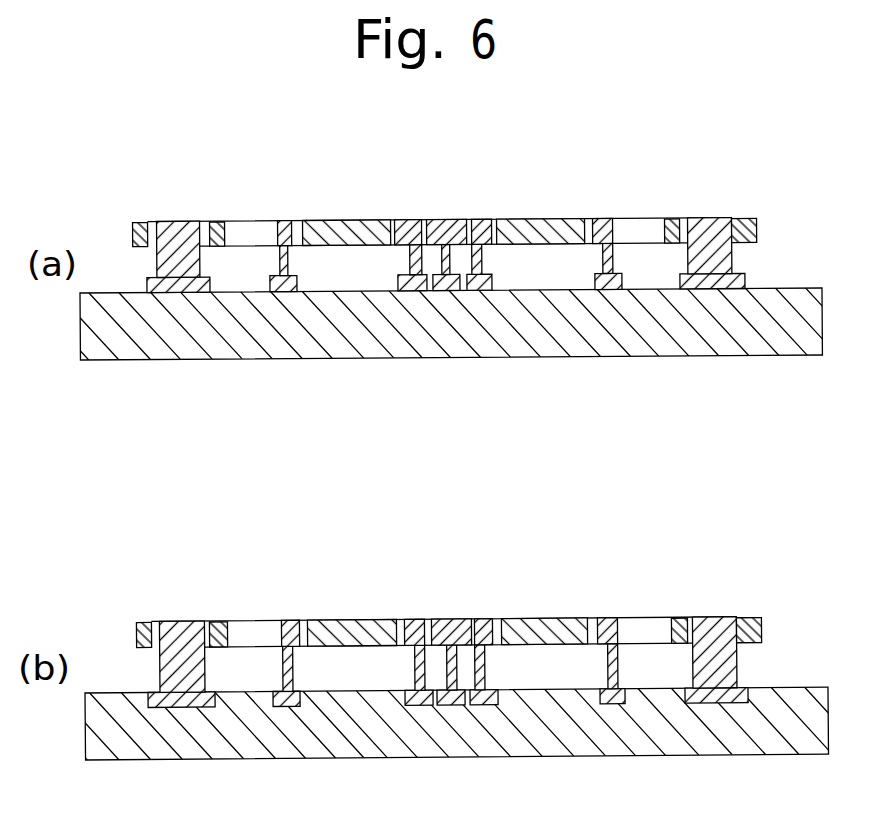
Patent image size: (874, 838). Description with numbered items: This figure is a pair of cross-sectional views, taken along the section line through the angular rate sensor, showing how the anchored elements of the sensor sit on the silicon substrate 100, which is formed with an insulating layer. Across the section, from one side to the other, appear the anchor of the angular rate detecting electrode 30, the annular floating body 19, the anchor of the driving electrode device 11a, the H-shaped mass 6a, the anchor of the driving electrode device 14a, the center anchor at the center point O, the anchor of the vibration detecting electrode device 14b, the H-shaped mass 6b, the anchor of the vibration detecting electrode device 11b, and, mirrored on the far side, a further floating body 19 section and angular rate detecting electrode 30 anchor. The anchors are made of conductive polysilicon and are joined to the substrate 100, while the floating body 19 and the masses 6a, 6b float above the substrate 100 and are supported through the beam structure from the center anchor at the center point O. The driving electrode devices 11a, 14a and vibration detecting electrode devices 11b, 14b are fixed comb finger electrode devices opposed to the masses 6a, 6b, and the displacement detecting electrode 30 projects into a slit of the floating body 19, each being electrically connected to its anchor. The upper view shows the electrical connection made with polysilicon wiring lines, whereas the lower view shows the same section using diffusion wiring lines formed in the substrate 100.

The silicon substrate 100 is at (222, 333).
The angular rate detecting electrode 30 is at (175, 222).
The floating body 19 is at (218, 220).
The driving electrode device 11a is at (283, 220).
The H-shaped mass 6a is at (340, 222).
The driving electrode device 14a is at (407, 222).
The center point O is at (448, 213).
The vibration detecting electrode device 14b is at (482, 218).
The H-shaped mass 6b is at (545, 218).
The vibration detecting electrode device 11b is at (605, 218).